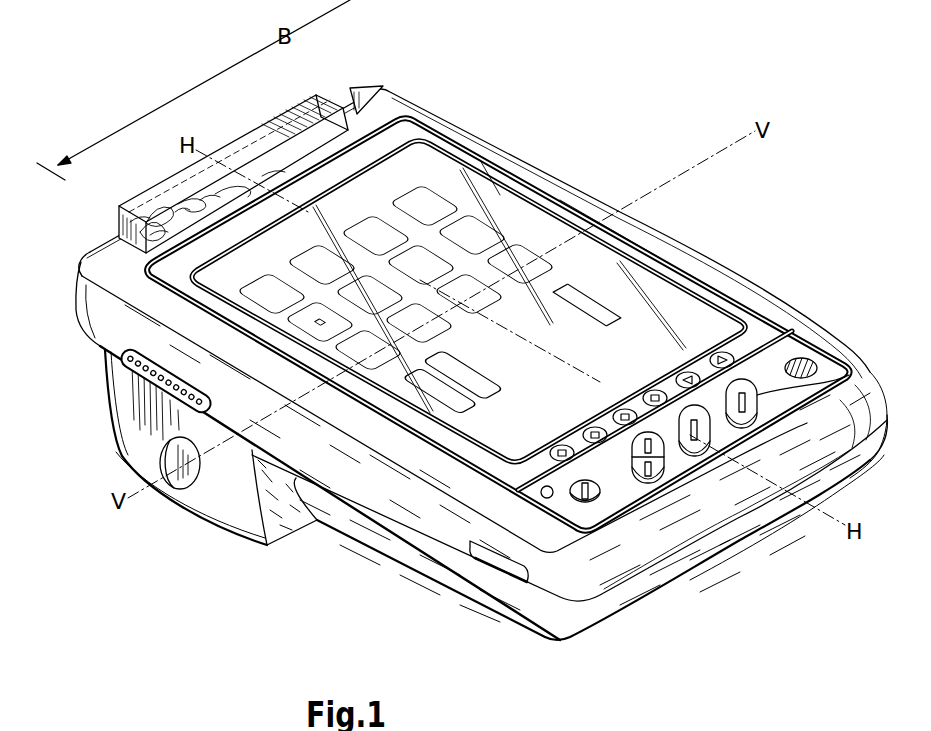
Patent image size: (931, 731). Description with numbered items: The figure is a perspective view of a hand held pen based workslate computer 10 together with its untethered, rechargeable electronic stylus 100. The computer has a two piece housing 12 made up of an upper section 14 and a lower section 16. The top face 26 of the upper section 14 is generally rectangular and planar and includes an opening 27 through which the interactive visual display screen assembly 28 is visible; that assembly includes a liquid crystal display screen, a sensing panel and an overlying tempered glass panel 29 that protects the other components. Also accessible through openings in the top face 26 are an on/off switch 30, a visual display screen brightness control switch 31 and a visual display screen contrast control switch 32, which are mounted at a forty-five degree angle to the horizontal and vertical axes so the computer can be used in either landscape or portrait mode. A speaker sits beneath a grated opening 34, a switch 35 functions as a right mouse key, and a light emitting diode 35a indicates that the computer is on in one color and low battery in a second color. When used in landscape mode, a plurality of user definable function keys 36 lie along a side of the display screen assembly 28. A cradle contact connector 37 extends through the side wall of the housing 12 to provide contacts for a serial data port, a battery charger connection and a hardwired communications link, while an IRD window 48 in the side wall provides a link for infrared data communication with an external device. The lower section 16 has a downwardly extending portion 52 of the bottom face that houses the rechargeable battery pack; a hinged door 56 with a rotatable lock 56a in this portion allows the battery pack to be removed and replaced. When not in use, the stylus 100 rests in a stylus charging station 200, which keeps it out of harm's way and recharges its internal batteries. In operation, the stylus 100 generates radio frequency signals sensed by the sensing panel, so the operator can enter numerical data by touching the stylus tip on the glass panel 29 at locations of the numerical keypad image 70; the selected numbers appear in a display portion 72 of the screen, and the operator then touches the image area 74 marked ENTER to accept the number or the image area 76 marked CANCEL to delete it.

The workslate computer 10 is at (145, 80).
The housing 12 is at (120, 115).
The upper section 14 is at (105, 330).
The lower section 16 is at (667, 585).
The top face 26 is at (452, 130).
The opening 27 is at (625, 255).
The interactive visual display screen assembly 28 is at (547, 182).
The tempered glass panel 29 is at (525, 230).
The on/off switch 30 is at (851, 362).
The visual display screen brightness control switch 31 is at (712, 440).
The visual display screen contrast control switch 32 is at (664, 470).
The grated opening 34 is at (803, 357).
The switch 35 is at (613, 483).
The light emitting diode 35a is at (553, 497).
The user definable function keys 36 is at (722, 353).
The cradle contact connector 37 is at (120, 357).
The IRD window 48 is at (478, 555).
The downwardly extending portion 52 is at (260, 498).
The hinged door 56 is at (160, 445).
The rotatable lock 56a is at (177, 475).
The numerical keypad image 70 is at (271, 254).
The display portion 72 is at (605, 305).
The image area marked ENTER 74 is at (450, 412).
The image area marked CANCEL 76 is at (487, 392).
The electronic stylus 100 is at (357, 85).
The stylus charging station 200 is at (283, 100).